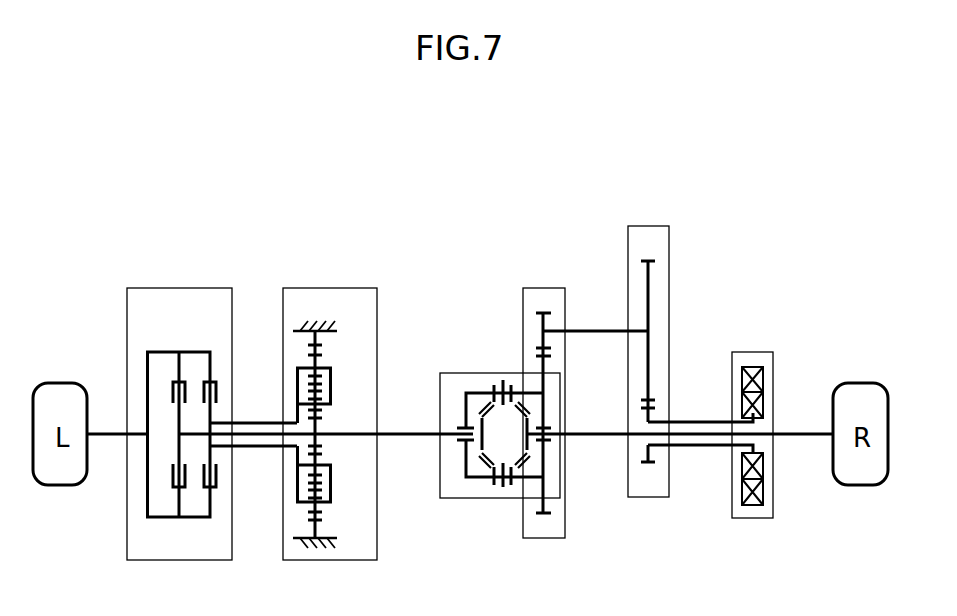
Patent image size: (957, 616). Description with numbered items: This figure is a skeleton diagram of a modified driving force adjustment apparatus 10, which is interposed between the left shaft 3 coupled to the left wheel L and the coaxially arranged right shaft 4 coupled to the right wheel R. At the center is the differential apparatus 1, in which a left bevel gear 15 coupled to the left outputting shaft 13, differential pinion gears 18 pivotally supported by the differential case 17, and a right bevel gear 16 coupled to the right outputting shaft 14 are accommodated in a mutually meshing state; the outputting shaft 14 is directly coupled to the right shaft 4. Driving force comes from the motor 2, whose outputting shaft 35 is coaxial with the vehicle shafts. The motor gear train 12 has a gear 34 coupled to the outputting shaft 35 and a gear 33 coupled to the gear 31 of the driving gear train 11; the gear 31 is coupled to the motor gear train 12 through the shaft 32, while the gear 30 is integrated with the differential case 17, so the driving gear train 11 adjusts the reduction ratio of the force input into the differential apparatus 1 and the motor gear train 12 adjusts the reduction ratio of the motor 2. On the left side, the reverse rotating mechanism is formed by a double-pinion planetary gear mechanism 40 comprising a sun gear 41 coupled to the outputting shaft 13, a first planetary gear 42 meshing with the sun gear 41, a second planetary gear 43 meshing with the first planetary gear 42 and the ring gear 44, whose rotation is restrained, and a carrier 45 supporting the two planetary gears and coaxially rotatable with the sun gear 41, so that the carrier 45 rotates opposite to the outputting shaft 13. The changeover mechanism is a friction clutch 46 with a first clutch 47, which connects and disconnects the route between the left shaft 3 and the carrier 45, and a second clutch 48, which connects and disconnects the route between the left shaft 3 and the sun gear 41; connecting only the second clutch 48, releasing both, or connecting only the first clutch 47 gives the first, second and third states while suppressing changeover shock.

The driving force adjustment apparatus 10 is at (141, 186).
The differential apparatus 1 is at (458, 372).
The motor 2 is at (753, 352).
The left shaft 3 is at (106, 430).
The right shaft 4 is at (798, 430).
The driving gear train 11 is at (546, 288).
The motor gear train 12 is at (649, 226).
The outputting shaft 13 is at (416, 432).
The outputting shaft 14 is at (584, 431).
The left bevel gear 15 is at (480, 450).
The right bevel gear 16 is at (531, 451).
The differential case 17 is at (475, 480).
The differential pinion gears 18 is at (490, 400).
The gear 30 is at (549, 356).
The gear 31 is at (537, 318).
The shaft 32 is at (596, 329).
The gear 33 is at (652, 298).
The gear 34 is at (652, 456).
The outputting shaft 35 is at (702, 420).
The planetary gear mechanism 40 is at (327, 288).
The sun gear 41 is at (322, 450).
The first planetary gear 42 is at (322, 414).
The second planetary gear 43 is at (331, 382).
The ring gear 44 is at (321, 530).
The carrier 45 is at (297, 483).
The friction clutch 46 is at (180, 288).
The first clutch 47 is at (216, 394).
The second clutch 48 is at (188, 395).